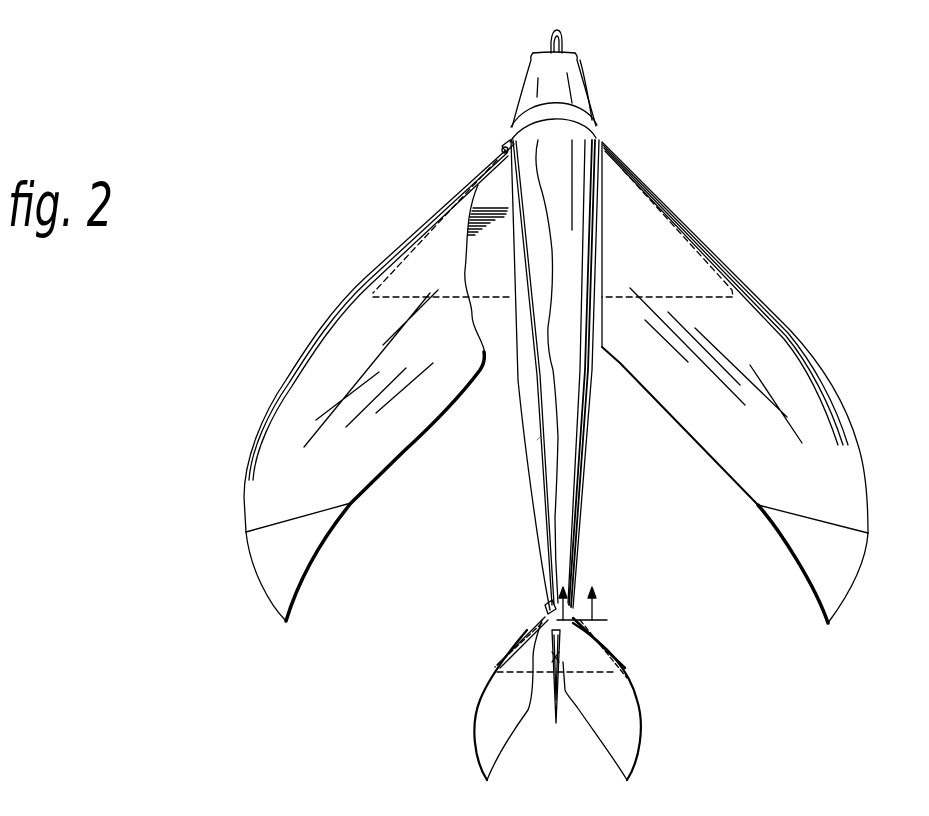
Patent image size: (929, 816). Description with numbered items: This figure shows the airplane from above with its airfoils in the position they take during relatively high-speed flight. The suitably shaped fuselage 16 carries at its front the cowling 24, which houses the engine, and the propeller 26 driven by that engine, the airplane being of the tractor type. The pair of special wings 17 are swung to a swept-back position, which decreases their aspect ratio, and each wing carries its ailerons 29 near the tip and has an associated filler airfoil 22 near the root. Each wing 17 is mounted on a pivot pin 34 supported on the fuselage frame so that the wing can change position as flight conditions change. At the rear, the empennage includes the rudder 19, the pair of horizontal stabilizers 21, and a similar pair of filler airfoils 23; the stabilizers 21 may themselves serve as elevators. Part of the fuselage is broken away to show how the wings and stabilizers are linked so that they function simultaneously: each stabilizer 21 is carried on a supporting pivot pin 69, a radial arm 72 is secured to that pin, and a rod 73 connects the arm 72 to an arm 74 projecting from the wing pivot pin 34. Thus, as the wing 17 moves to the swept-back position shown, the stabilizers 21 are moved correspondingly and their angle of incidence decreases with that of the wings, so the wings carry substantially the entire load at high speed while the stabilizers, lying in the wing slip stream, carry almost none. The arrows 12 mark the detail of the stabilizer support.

The direction of flight arrows 12 is at (582, 595).
The fuselage 16 is at (582, 443).
The wings 17 is at (405, 440).
The rudder 19 is at (565, 700).
The horizontal stabilizers 21 is at (482, 717).
The filler airfoils 22 is at (497, 292).
The filler airfoils 23 is at (608, 633).
The cowling 24 is at (583, 91).
The propeller 26 is at (560, 40).
The ailerons 29 is at (308, 564).
The pivot pin 34 is at (503, 150).
The supporting pivot pin 69 is at (545, 616).
The radial arm 72 is at (545, 603).
The rod 73 is at (539, 437).
The arm 74 is at (506, 146).